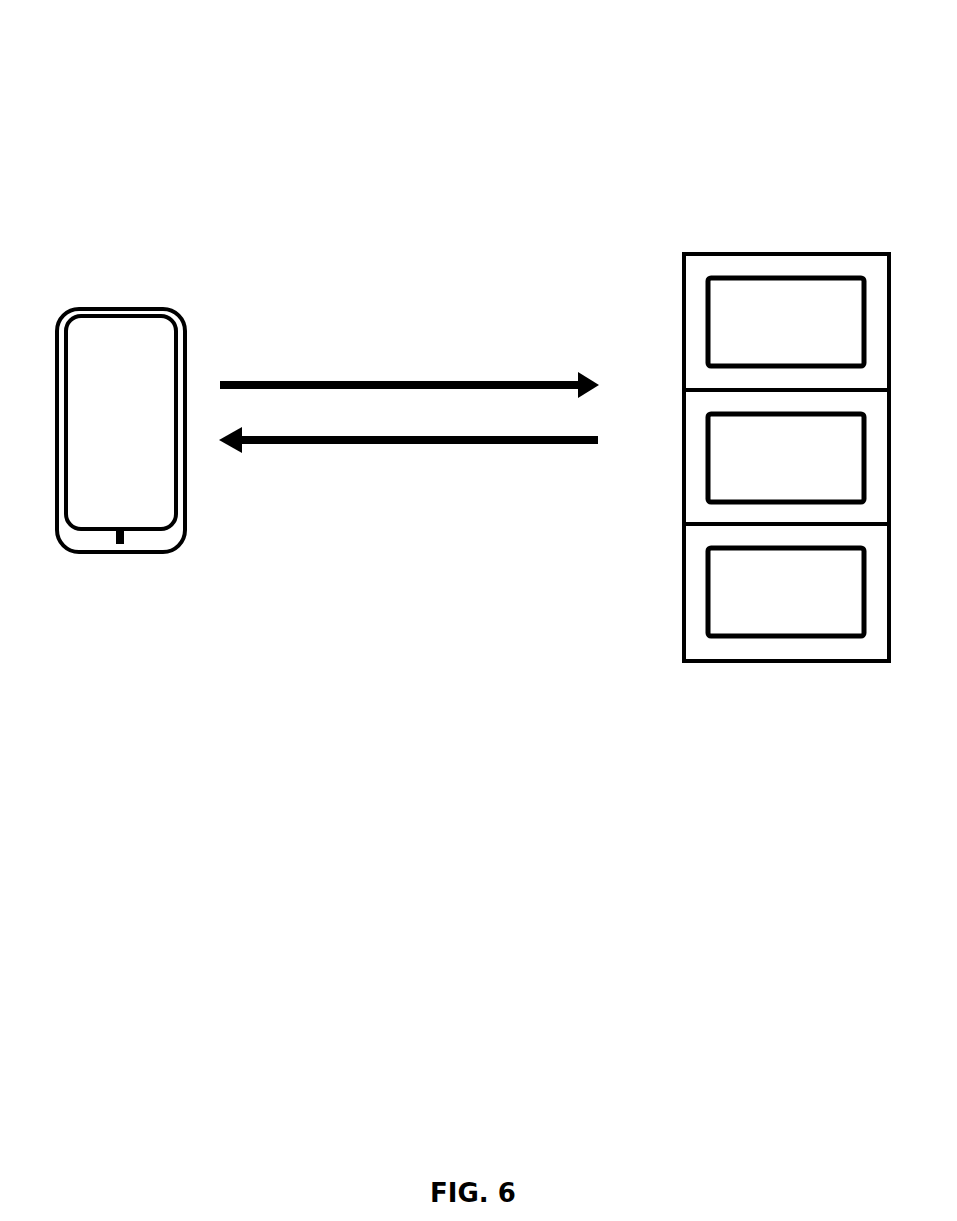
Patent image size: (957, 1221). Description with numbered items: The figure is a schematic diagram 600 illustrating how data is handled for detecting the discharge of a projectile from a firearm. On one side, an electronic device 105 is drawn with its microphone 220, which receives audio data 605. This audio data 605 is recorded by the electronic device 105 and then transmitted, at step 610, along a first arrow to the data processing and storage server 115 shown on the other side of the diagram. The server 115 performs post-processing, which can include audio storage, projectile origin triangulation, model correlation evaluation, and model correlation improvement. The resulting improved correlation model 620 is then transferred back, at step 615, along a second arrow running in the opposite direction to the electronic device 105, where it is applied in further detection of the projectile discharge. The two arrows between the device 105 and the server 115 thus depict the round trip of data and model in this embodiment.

The schematic diagram 600 is at (167, 52).
The electronic device 105 is at (83, 543).
The microphone 220 is at (122, 538).
The data processing and storage server 115 is at (763, 642).
The transmitting step 610 is at (340, 370).
The audio data 605 is at (573, 368).
The transferring step 615 is at (523, 455).
The improved correlation model 620 is at (371, 510).